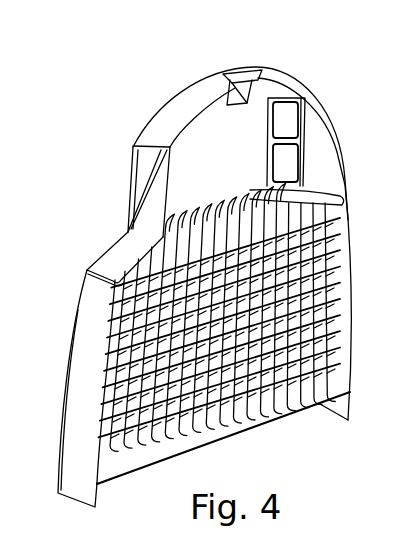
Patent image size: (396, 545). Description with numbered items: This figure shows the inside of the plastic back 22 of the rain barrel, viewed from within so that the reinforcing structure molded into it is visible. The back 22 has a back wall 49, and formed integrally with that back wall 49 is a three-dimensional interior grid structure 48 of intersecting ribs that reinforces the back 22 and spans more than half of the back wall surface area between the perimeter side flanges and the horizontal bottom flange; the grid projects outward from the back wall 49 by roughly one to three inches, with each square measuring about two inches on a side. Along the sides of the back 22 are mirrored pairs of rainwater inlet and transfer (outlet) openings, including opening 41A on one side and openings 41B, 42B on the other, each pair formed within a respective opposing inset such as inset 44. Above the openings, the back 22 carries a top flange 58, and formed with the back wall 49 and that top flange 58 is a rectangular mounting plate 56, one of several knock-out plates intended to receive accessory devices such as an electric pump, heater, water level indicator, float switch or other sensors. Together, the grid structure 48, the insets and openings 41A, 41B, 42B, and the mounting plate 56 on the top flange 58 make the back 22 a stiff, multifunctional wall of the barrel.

The plastic back 22 is at (163, 120).
The top flange 58 is at (197, 96).
The rectangular mounting plate 56 is at (244, 73).
The rainwater inlet and transfer opening 41A is at (133, 170).
The rainwater inlet and transfer opening 41B is at (297, 118).
The rainwater inlet and transfer opening 42B is at (273, 163).
The inset 44 is at (110, 263).
The interior grid structure 48 is at (110, 305).
The back wall 49 is at (209, 184).